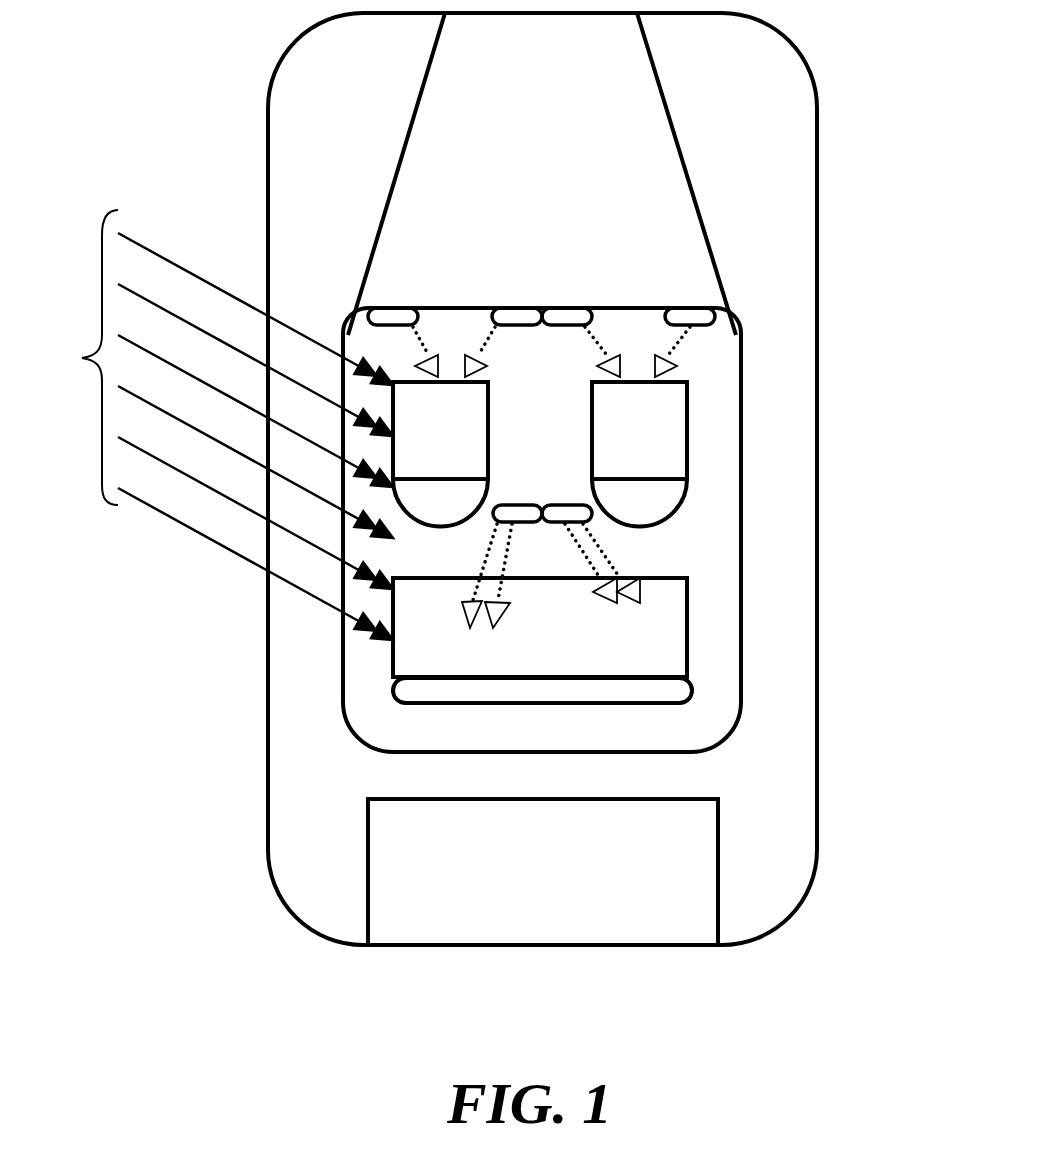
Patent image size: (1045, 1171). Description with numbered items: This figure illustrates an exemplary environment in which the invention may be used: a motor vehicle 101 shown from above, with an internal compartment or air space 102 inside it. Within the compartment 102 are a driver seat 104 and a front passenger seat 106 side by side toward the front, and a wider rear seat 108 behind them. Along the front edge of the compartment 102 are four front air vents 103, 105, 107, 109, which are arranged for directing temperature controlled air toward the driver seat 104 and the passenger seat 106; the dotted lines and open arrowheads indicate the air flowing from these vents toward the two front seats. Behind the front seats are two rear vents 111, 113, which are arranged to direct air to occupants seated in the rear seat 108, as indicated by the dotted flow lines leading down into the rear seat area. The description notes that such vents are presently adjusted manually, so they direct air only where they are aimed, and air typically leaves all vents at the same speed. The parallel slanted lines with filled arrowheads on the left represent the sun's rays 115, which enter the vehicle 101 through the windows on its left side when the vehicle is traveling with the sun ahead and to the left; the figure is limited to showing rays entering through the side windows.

The motor vehicle 101 is at (817, 240).
The internal compartment 102 is at (707, 752).
The front air vent 103 is at (393, 307).
The driver seat 104 is at (416, 507).
The front air vent 105 is at (517, 307).
The front passenger seat 106 is at (667, 502).
The front air vent 107 is at (555, 307).
The rear seat 108 is at (445, 703).
The front air vent 109 is at (690, 307).
The rear vent 111 is at (507, 504).
The rear vent 113 is at (560, 504).
The sun's rays 115 is at (82, 358).